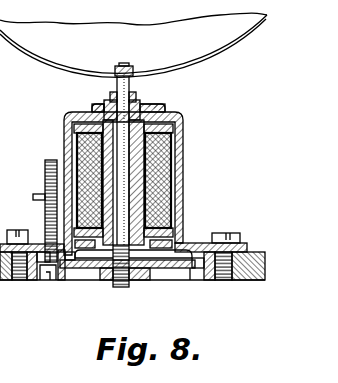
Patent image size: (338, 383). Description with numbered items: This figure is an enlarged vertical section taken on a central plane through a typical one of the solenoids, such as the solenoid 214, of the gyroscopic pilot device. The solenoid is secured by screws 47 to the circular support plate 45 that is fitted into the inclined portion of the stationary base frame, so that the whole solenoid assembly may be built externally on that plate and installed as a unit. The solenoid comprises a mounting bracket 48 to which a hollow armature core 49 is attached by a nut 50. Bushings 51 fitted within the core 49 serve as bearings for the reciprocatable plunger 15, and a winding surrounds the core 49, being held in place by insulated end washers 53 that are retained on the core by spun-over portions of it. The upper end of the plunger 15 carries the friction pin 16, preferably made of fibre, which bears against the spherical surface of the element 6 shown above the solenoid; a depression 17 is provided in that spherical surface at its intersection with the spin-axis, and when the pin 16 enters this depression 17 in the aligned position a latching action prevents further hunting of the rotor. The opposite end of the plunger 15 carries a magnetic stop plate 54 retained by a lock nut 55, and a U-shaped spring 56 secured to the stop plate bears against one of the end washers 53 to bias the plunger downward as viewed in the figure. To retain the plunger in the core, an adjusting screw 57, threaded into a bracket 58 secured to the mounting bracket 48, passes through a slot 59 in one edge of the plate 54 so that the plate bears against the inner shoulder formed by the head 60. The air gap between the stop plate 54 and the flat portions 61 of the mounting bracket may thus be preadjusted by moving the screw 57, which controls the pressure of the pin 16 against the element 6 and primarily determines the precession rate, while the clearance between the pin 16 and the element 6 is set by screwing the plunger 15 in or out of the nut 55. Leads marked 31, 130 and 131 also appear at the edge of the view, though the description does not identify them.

The spherical element 6 is at (216, 52).
The depression 17 is at (126, 65).
The friction pin 16 is at (131, 81).
The plunger 15 is at (137, 97).
The bushings 51 is at (113, 104).
The nut 50 is at (92, 110).
The insulated end washers 53 is at (181, 134).
The solenoid 214 is at (171, 159).
The mounting bracket 48 is at (184, 180).
The hollow armature core 49 is at (105, 158).
The adjusting screw 57 is at (46, 170).
The bracket 58 is at (34, 196).
The screws 47 is at (16, 230).
The support plate 45 is at (256, 281).
The magnetic stop plate 54 is at (166, 270).
The lock nut 55 is at (138, 283).
The U-shaped spring 56 is at (92, 258).
The flat portions 61 is at (72, 270).
The slot 59 is at (62, 281).
The head 60 is at (45, 281).
The lead 31 is at (9, 324).
The lead 130 is at (0, 341).
The lead 131 is at (0, 359).